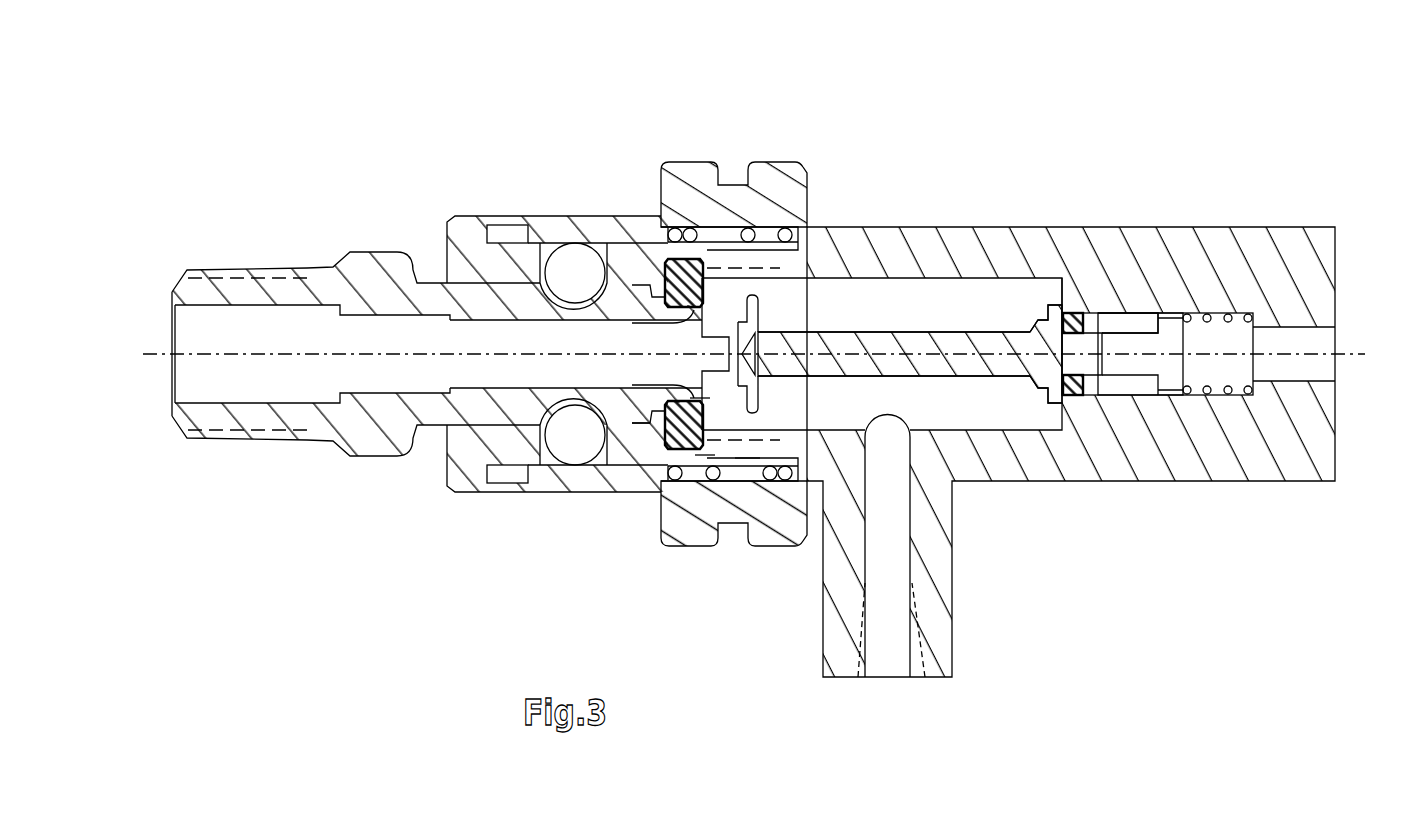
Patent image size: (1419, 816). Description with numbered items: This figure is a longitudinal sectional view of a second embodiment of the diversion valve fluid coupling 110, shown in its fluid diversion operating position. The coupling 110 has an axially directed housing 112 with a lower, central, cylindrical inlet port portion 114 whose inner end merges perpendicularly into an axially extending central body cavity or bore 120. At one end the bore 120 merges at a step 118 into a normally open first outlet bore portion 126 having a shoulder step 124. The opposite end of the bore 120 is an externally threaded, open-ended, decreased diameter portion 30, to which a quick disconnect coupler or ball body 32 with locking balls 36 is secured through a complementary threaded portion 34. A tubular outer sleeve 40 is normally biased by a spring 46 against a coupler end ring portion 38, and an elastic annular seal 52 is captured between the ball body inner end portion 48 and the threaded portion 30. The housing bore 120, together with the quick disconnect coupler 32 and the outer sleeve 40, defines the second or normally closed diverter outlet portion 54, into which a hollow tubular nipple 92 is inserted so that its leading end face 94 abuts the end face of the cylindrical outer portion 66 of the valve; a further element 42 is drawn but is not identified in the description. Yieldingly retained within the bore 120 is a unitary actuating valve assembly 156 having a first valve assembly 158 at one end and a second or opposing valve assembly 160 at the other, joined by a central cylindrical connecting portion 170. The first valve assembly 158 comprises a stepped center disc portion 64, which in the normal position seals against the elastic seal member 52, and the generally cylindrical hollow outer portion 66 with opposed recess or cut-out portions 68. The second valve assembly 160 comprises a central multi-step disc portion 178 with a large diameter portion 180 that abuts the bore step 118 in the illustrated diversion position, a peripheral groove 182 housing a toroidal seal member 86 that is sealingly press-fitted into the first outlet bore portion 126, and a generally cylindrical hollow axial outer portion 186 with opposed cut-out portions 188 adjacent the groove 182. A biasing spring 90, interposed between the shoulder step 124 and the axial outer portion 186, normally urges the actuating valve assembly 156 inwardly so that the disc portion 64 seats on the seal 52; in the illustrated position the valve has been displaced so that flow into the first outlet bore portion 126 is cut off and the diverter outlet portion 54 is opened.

The externally threaded decreased diameter portion 30 is at (716, 270).
The quick disconnect coupler or ball body 32 is at (505, 262).
The complementary threaded portion 34 is at (747, 460).
The locking balls 36 is at (577, 266).
The coupler end ring portion 38 is at (464, 214).
The tubular outer sleeve 40 is at (598, 212).
The nut 42 is at (690, 162).
The spring 46 is at (772, 470).
The ball body inner end portion 48 is at (680, 412).
The elastic annular seal 52 is at (705, 396).
The second or normally-closed diverter outlet portion 54 is at (553, 351).
The stepped center disc portion 64 is at (761, 404).
The cylindrical hollow outer portion 66 is at (686, 326).
The opposed recess or cut-out portions 68 is at (711, 335).
The toroidal seal member 86 is at (1082, 397).
The biasing spring 90 is at (1240, 396).
The nipple 92 is at (373, 244).
The nipple leading end face 94 is at (668, 395).
The diversion valve fluid coupling 110 is at (866, 114).
The housing 112 is at (1138, 226).
The cylindrical inlet port portion 114 is at (935, 634).
The step 118 is at (1062, 300).
The central body cavity or bore 120 is at (870, 295).
The shoulder step 124 is at (1256, 325).
The first outlet bore portion 126 is at (1144, 311).
The unitary actuating valve assembly 156 is at (814, 330).
The first valve assembly 158 is at (707, 452).
The second or opposing valve assembly 160 is at (1112, 328).
The central cylindrical connecting portion 170 is at (872, 340).
The central multi-step disc portion 178 is at (1045, 382).
The large diameter portion 180 is at (1057, 298).
The peripheral groove 182 is at (1092, 392).
The axial outer portion 186 is at (1185, 318).
The opposed recess or cut-out portions 188 is at (1162, 311).